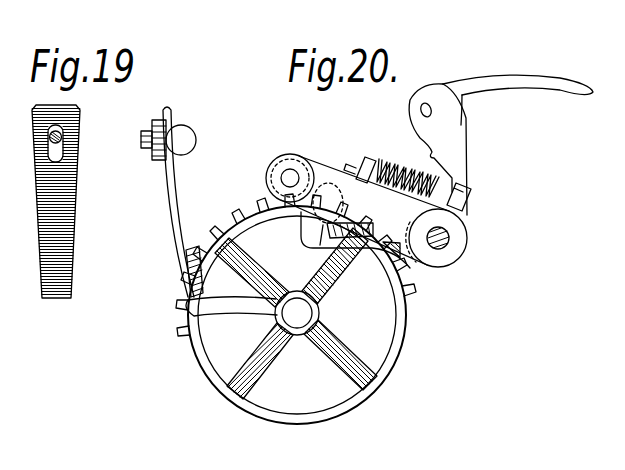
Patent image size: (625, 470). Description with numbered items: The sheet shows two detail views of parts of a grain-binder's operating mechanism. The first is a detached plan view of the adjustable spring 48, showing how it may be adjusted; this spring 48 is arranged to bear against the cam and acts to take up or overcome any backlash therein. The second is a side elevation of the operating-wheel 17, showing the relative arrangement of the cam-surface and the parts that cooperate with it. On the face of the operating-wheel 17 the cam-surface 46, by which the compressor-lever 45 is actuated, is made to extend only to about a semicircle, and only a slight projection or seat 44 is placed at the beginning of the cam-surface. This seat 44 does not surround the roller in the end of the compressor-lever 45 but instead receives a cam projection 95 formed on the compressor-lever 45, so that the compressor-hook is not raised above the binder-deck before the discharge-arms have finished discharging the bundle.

In FIG. 20, the operating-wheel 17 is at (247, 205).
In FIG. 20, the projection or seat at the beginning of the cam-surface 44 is at (300, 214).
In FIG. 20, the compressor-lever 45 is at (331, 172).
In FIG. 20, the cam-surface 46 is at (396, 353).
In FIG. 19, the adjustable spring 48 is at (91, 213).
In FIG. 20, the adjustable spring 48 is at (170, 188).
In FIG. 20, the cam projection 95 is at (357, 225).